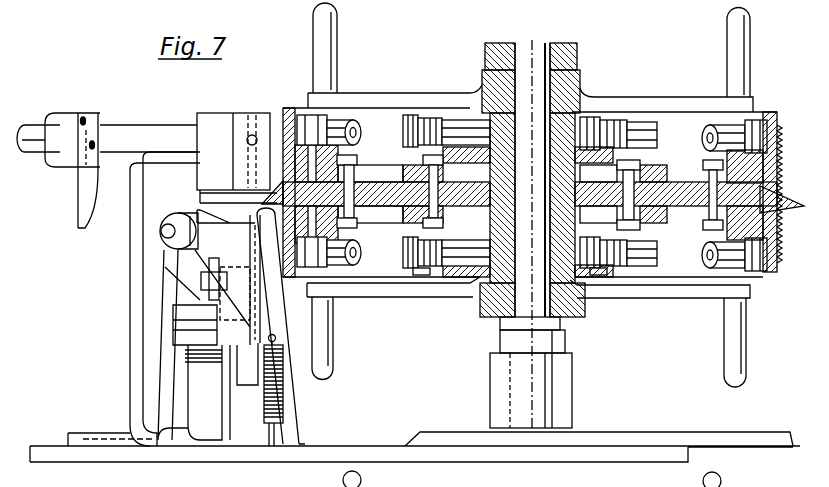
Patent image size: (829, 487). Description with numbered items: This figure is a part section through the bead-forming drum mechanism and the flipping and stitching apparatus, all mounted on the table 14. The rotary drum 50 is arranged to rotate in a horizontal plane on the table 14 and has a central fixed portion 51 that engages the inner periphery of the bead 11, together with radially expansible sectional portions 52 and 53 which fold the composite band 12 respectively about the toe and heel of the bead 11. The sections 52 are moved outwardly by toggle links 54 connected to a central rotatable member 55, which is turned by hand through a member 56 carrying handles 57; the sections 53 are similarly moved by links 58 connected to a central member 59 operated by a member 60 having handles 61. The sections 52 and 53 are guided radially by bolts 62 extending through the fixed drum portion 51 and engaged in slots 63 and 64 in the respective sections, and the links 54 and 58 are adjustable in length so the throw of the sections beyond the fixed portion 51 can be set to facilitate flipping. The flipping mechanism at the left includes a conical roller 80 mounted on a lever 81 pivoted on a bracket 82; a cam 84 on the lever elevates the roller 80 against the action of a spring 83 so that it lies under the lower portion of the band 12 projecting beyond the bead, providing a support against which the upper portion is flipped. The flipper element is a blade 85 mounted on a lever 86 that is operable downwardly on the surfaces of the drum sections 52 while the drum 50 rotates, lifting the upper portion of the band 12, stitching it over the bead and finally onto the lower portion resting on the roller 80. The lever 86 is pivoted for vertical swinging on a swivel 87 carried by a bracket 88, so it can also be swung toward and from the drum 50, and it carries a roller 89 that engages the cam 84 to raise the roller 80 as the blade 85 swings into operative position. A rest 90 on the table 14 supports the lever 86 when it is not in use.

The bead 11 is at (790, 204).
The composite band 12 is at (780, 163).
The table 14 is at (352, 458).
The rotary drum 50 is at (302, 107).
The central fixed portion 51 is at (775, 208).
The radially expansible sectional portions 52 is at (783, 108).
The radially expansible sectional portions 53 is at (768, 253).
The toggle links 54 is at (450, 118).
The central rotatable member 55 is at (574, 78).
The member 56 is at (657, 106).
The handles 57 is at (333, 82).
The links 58 is at (413, 264).
The central member 59 is at (493, 318).
The member 60 is at (428, 290).
The handles 61 is at (325, 341).
The bolts 62 is at (357, 172).
The slots 63 is at (377, 176).
The slots 64 is at (445, 224).
The conical roller 80 is at (252, 267).
The lever 81 is at (243, 388).
The bracket 82 is at (195, 408).
The spring 83 is at (283, 408).
The cam 84 is at (192, 216).
The blade 85 is at (78, 222).
The lever 86 is at (118, 131).
The swivel 87 is at (258, 122).
The bracket 88 is at (170, 370).
The roller 89 is at (163, 247).
The rest 90 is at (130, 290).